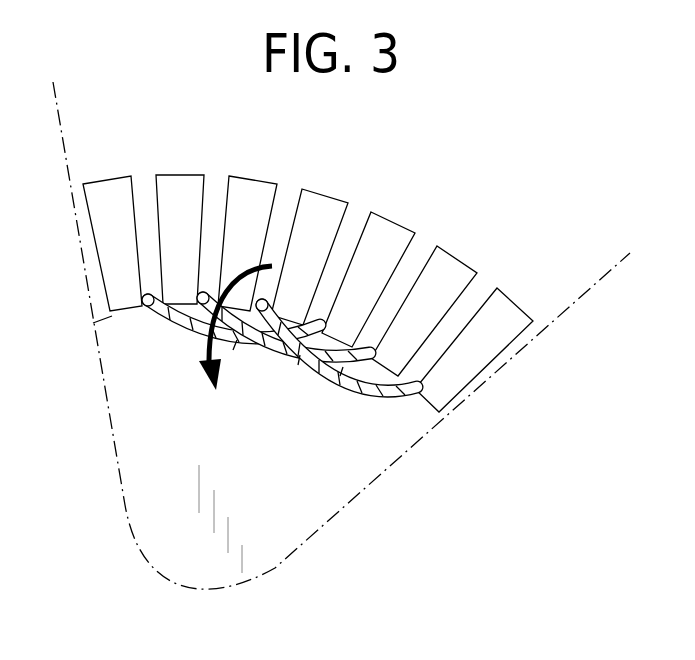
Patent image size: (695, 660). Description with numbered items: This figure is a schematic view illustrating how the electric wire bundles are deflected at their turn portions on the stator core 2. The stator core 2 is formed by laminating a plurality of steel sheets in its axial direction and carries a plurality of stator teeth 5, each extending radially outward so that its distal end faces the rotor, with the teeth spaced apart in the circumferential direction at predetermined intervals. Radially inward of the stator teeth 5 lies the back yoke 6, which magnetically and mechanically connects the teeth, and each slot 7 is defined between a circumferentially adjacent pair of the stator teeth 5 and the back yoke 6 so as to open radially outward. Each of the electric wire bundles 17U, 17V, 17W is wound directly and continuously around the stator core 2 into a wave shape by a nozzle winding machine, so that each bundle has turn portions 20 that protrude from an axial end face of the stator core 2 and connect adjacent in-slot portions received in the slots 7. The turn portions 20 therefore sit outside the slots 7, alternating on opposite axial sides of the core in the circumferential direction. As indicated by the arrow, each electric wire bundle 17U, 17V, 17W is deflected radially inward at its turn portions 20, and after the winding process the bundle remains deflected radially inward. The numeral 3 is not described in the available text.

The stator core 2 is at (312, 281).
The coil 3 is at (244, 412).
The stator teeth 5 is at (387, 228).
The back yoke 6 is at (278, 463).
The slots 7 is at (350, 249).
The electric wire bundle 17U is at (183, 312).
The electric wire bundle 17V is at (272, 362).
The electric wire bundle 17W is at (356, 393).
The turn portions 20 is at (236, 352).